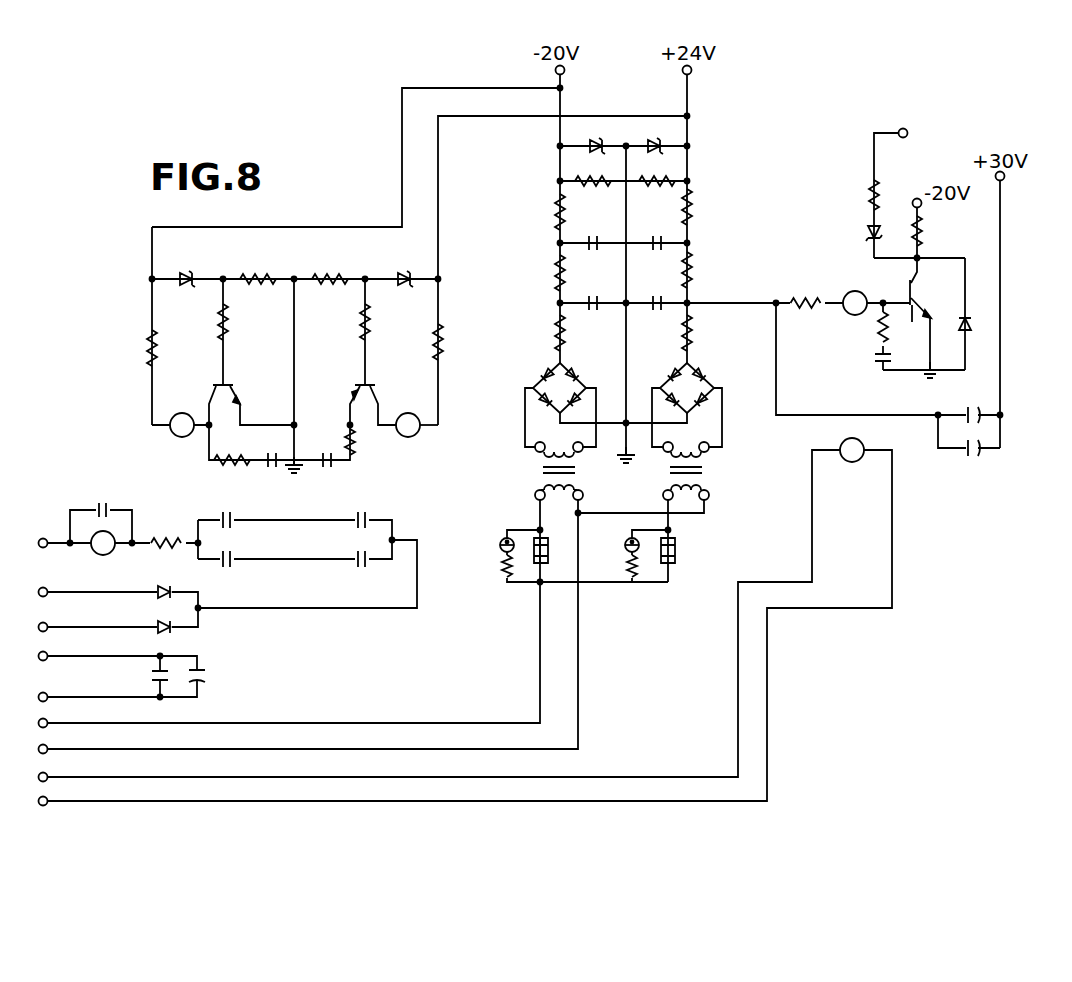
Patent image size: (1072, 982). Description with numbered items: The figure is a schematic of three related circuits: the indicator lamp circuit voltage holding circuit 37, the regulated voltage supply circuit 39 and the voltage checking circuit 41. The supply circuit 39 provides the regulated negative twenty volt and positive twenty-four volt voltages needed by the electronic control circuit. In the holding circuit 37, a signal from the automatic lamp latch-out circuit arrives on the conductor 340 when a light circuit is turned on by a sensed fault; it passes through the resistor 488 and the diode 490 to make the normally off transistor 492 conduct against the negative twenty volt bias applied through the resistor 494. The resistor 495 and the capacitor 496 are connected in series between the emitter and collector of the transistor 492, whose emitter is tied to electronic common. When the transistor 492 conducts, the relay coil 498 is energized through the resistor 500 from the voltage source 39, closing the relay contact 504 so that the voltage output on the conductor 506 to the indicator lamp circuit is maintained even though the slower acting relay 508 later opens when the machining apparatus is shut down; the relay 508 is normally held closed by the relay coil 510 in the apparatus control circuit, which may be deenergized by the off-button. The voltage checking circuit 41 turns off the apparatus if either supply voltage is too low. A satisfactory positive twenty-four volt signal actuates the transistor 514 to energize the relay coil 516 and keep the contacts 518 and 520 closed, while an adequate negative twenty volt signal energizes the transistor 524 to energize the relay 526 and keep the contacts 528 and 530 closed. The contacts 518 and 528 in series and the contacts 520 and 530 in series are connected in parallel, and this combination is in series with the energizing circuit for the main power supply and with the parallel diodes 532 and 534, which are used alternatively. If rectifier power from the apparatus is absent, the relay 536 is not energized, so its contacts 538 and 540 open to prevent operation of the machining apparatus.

The indicator lamp circuit voltage holding circuit 37 is at (968, 291).
The regulated voltage supply circuit 39 is at (689, 234).
The voltage checking circuit 41 is at (438, 318).
The conductor 340 is at (884, 130).
The resistor 488 is at (878, 183).
The diode 490 is at (866, 240).
The transistor 492 is at (914, 314).
The resistor 494 is at (924, 241).
The resistor 495 is at (877, 318).
The capacitor 496 is at (879, 362).
The relay coil 498 is at (870, 270).
The resistor 500 is at (813, 297).
The relay contact 504 is at (980, 408).
The conductor 506 is at (1000, 352).
The relay 508 is at (968, 455).
The relay coil 510 is at (862, 443).
The transistor 514 is at (378, 400).
The relay coil 516 is at (420, 432).
The relay contact 518 is at (368, 515).
The relay contact 520 is at (355, 563).
The transistor 524 is at (214, 399).
The relay 526 is at (180, 440).
The relay contact 528 is at (242, 497).
The relay contact 530 is at (234, 562).
The diode 532 is at (177, 572).
The diode 534 is at (154, 622).
The relay 536 is at (107, 555).
The relay contact 538 is at (200, 682).
The relay contact 540 is at (150, 670).